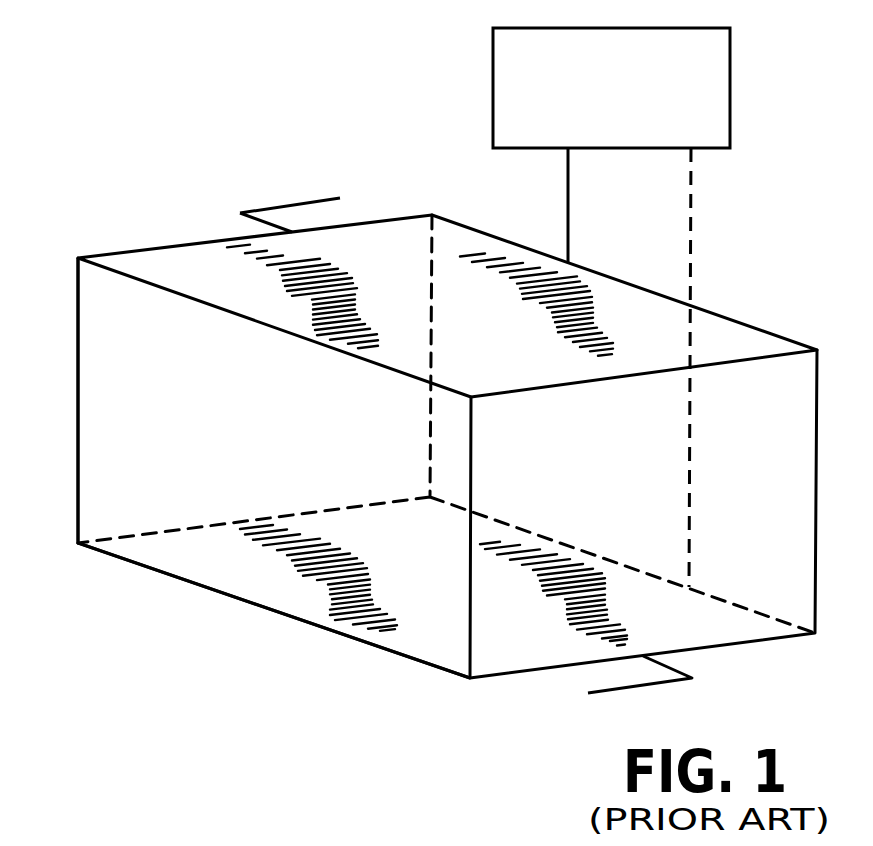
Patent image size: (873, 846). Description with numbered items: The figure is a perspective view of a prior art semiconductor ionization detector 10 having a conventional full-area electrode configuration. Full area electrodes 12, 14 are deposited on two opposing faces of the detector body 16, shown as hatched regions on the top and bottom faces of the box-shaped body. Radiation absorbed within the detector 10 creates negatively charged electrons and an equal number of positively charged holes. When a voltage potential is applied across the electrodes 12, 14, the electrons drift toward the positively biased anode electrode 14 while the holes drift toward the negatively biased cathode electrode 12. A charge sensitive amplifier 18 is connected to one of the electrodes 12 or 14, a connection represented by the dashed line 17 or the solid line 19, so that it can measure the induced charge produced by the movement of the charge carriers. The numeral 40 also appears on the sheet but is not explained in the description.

The semiconductor ionization detector 10 is at (200, 172).
The full area electrode 12 is at (417, 643).
The full area electrode 14 is at (618, 298).
The detector body 16 is at (178, 503).
The dashed line 17 is at (691, 265).
The charge sensitive amplifier 18 is at (730, 100).
The solid line 19 is at (568, 205).
The reference arrow 40 is at (210, 832).